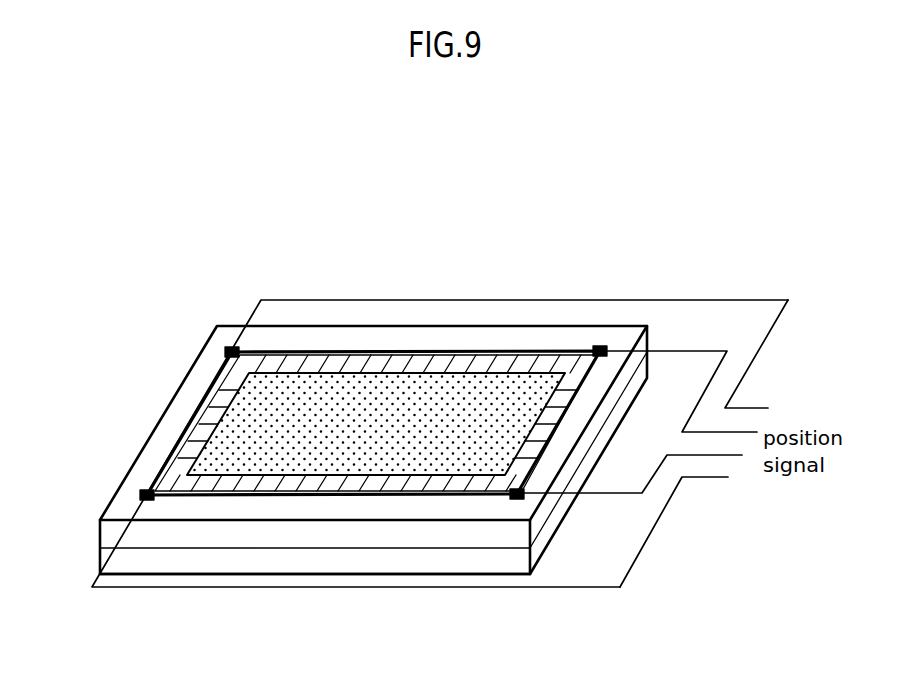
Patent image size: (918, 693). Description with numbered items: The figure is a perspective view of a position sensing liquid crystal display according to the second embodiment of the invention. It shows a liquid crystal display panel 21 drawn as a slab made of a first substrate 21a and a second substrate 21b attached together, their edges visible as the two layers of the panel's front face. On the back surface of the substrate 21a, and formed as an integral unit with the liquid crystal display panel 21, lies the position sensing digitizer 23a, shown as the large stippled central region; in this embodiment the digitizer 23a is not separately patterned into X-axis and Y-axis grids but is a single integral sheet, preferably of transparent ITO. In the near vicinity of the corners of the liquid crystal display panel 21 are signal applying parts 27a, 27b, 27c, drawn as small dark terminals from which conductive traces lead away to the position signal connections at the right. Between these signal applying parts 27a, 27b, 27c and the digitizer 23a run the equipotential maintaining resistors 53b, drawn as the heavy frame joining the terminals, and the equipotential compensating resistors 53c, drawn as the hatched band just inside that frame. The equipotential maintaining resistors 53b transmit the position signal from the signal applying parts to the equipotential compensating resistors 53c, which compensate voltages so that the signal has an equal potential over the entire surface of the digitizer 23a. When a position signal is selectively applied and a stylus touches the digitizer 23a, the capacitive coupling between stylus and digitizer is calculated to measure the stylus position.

The liquid crystal display panel 21 is at (118, 352).
The first substrate 21a is at (118, 533).
The second substrate 21b is at (118, 565).
The position sensing digitizer 23a is at (335, 390).
The signal applying part 27a is at (228, 352).
The signal applying part 27b is at (601, 350).
The signal applying part 27c is at (146, 495).
The equipotential maintaining resistors 53b is at (173, 445).
The equipotential compensating resistors 53c is at (183, 463).